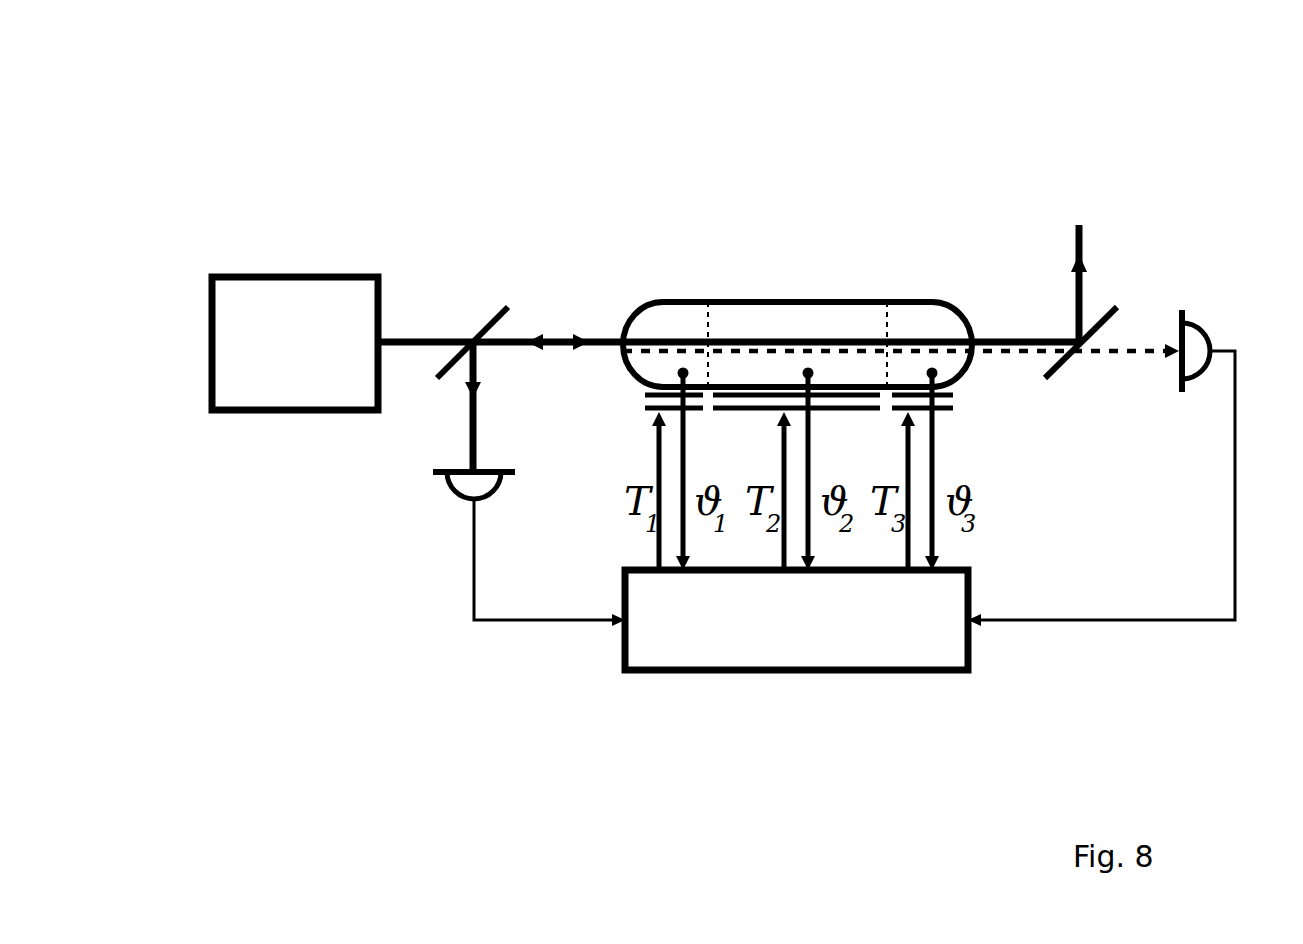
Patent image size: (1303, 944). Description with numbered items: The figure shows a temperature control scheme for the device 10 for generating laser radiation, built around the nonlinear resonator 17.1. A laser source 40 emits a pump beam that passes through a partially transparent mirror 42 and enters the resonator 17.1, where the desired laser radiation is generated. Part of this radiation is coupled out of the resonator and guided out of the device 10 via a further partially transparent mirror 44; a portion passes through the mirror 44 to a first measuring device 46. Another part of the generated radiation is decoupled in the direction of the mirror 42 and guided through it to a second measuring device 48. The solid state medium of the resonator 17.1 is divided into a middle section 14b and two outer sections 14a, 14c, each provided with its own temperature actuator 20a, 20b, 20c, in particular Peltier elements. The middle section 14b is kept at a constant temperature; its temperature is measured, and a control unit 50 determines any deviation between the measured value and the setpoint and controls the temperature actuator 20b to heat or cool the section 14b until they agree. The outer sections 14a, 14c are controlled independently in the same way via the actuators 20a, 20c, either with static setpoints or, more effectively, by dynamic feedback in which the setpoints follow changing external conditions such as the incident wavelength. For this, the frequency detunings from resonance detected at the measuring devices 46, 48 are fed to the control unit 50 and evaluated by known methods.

The device for generating laser radiation 10 is at (312, 138).
The laser source 40 is at (212, 277).
The partially transparent mirror 42 is at (490, 314).
The nonlinear resonator 17.1 is at (779, 264).
The outer section of the solid state medium 14a is at (668, 317).
The middle section of the solid state medium 14b is at (773, 317).
The outer section of the solid state medium 14c is at (917, 317).
The temperature actuator 20a is at (697, 409).
The temperature actuator 20b is at (820, 409).
The temperature actuator 20c is at (950, 409).
The partially transparent mirror 44 is at (1113, 310).
The first measuring device 46 is at (1188, 310).
The second measuring device 48 is at (442, 476).
The control unit 50 is at (970, 672).